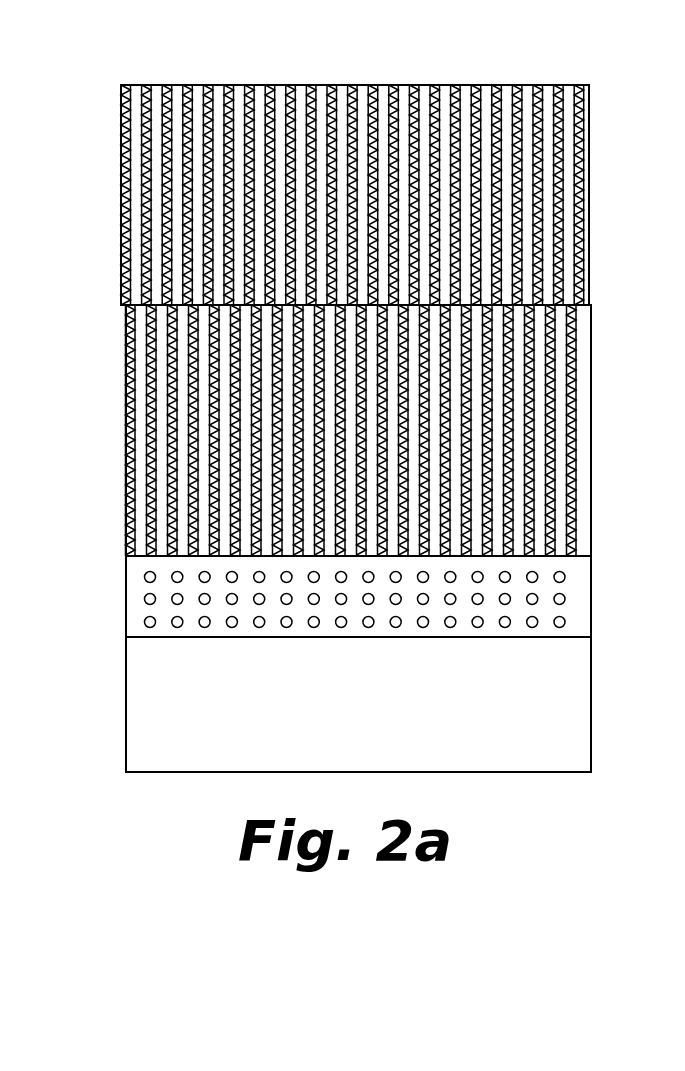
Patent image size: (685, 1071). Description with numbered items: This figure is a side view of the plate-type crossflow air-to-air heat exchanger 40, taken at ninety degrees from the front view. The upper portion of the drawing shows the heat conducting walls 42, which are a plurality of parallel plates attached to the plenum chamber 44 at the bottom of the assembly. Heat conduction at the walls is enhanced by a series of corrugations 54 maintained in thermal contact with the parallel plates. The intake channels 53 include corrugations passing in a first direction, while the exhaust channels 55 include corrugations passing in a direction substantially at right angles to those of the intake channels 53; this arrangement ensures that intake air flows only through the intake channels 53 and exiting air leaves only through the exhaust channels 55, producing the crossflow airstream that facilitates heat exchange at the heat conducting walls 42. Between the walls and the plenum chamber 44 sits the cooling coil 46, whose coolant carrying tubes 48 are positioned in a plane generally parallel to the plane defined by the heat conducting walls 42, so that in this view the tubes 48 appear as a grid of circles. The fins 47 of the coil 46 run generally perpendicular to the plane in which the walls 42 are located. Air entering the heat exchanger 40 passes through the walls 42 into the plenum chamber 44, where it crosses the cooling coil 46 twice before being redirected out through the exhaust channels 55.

The heat exchanger 40 is at (380, 425).
The heat conducting walls 42 is at (368, 191).
The plenum chamber 44 is at (580, 712).
The cooling coil 46 is at (367, 572).
The fins 47 is at (128, 609).
The coolant carrying tubes 48 is at (565, 619).
The intake channels 53 is at (577, 392).
The corrugations 54 is at (588, 264).
The exhaust channels 55 is at (122, 188).